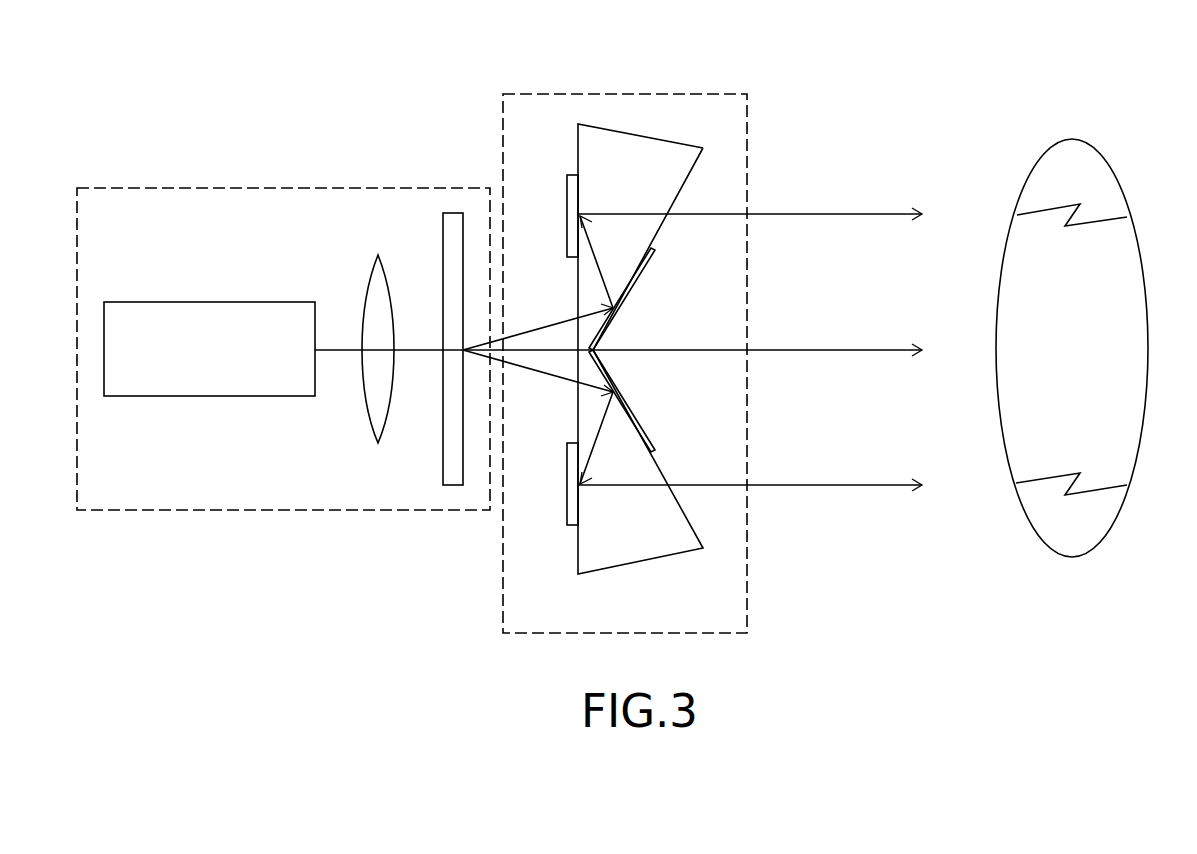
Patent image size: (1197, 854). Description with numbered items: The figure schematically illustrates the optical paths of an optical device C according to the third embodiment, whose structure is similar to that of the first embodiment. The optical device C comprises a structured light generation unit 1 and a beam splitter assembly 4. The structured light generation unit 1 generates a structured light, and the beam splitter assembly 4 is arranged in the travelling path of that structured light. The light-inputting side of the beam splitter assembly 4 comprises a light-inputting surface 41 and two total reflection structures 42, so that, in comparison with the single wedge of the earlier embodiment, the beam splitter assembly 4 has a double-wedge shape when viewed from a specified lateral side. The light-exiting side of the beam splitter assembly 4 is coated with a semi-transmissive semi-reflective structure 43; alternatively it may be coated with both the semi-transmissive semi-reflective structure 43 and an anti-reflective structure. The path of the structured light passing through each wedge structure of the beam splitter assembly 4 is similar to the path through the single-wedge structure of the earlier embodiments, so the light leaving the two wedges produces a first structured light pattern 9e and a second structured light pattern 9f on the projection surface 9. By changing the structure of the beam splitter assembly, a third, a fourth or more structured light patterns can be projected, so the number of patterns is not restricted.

The optical device C is at (383, 92).
The structured light generation unit 1 is at (177, 187).
The beam splitter assembly 4 is at (663, 93).
The light-inputting surface 41 is at (575, 147).
The total reflection structures 42 is at (572, 207).
The semi-transmissive semi-reflective structure 43 is at (644, 274).
The projection surface 9 is at (1105, 162).
The first structured light pattern 9e is at (1113, 215).
The second structured light pattern 9f is at (1117, 482).